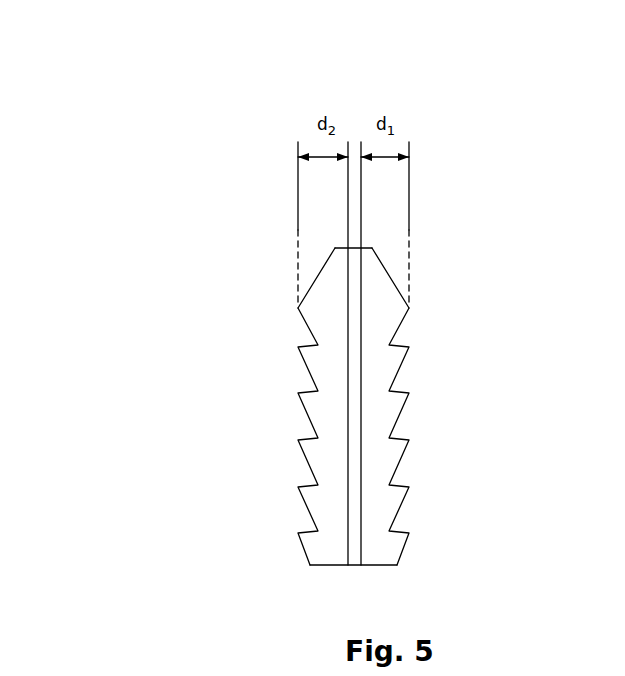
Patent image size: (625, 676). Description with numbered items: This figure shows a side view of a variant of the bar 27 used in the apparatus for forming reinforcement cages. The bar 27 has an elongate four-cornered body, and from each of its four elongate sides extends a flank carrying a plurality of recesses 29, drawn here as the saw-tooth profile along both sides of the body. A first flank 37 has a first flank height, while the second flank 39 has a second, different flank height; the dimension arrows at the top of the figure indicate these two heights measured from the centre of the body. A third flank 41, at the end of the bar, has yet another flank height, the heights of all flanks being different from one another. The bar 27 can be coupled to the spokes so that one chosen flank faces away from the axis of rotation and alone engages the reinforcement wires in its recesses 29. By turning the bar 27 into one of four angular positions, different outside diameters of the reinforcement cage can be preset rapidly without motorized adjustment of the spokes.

The bar 27 is at (174, 140).
The recesses 29 is at (302, 421).
The first flank 37 is at (385, 307).
The second flank 39 is at (327, 303).
The third flank 41 is at (358, 565).